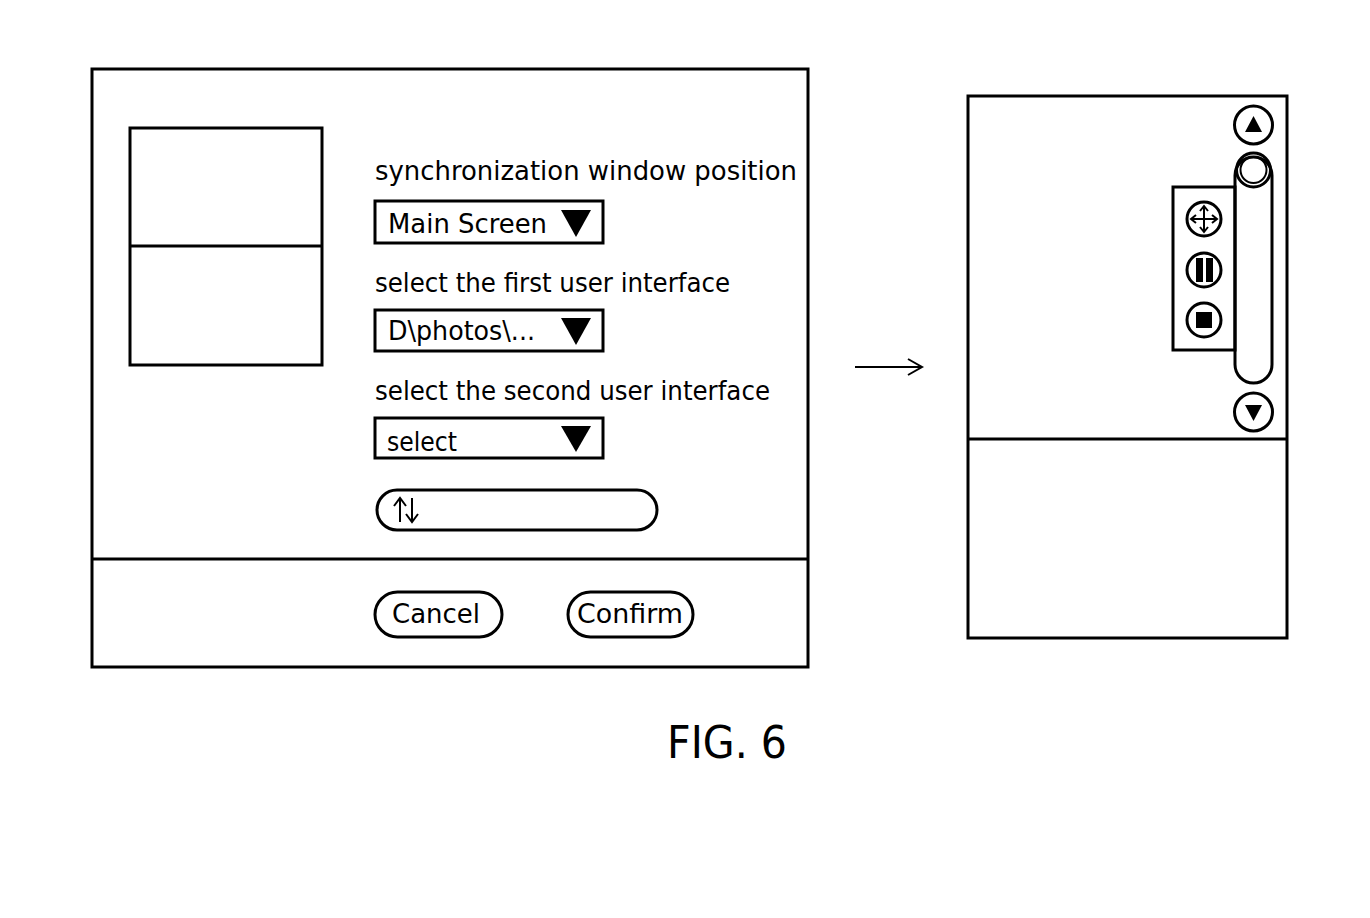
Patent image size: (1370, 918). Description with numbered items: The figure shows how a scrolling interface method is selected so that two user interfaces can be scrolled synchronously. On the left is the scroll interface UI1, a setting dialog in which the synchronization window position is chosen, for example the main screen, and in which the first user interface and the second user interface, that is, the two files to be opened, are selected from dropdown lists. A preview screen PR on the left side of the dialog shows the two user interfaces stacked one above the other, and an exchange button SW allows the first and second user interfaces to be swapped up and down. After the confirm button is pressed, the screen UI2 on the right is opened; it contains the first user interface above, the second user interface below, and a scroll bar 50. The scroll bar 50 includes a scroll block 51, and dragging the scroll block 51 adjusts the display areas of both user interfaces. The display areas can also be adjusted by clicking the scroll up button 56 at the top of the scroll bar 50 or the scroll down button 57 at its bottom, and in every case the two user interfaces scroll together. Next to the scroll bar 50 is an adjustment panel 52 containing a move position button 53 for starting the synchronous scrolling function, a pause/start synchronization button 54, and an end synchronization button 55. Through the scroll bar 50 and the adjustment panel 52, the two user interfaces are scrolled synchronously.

The scroll interface UI1 is at (92, 66).
The preview screen PR is at (130, 127).
The exchange button SW is at (377, 510).
The screen UI2 is at (968, 94).
The scroll bar 50 is at (1273, 267).
The scroll block 51 is at (1271, 169).
The adjustment panel 52 is at (1205, 187).
The move position button 53 is at (1186, 219).
The pause/start synchronization button 54 is at (1186, 270).
The end synchronization button 55 is at (1186, 320).
The scroll up button 56 is at (1273, 125).
The scroll down button 57 is at (1273, 410).